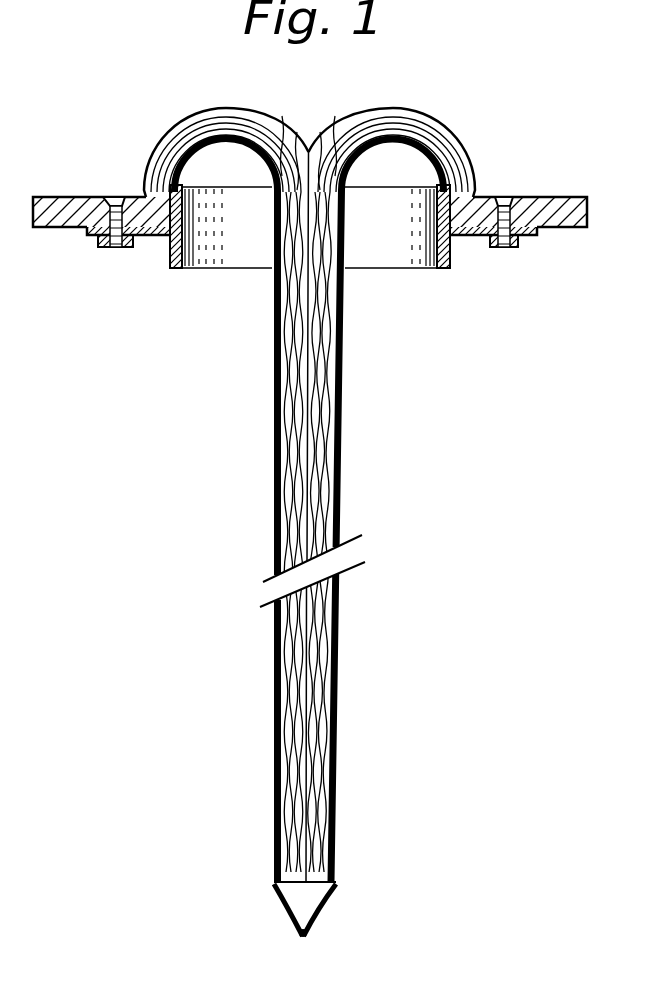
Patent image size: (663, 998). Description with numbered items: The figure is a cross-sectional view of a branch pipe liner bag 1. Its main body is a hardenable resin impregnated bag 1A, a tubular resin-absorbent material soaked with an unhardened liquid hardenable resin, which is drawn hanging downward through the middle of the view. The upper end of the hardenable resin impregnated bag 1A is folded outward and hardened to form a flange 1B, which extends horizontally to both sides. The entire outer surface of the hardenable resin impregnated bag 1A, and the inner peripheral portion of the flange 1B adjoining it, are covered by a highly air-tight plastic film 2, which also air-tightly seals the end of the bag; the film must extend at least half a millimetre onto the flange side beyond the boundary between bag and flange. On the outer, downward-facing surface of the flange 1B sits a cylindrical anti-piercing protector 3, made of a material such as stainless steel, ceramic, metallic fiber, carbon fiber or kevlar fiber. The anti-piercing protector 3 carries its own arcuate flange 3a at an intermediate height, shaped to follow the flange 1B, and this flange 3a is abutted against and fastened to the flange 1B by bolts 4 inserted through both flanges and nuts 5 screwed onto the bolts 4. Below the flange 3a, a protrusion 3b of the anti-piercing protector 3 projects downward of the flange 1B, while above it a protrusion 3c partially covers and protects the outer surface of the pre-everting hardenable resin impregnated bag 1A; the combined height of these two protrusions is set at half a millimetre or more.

The branch pipe liner bag 1 is at (441, 109).
The hardenable resin impregnated bag 1A is at (336, 484).
The flange 1B is at (565, 198).
The plastic film 2 is at (275, 480).
The anti-piercing protector 3 is at (450, 267).
The flange 3a is at (537, 233).
The protrusion 3b is at (172, 270).
The protrusion 3c is at (186, 218).
The bolts 4 is at (116, 197).
The nuts 5 is at (100, 248).